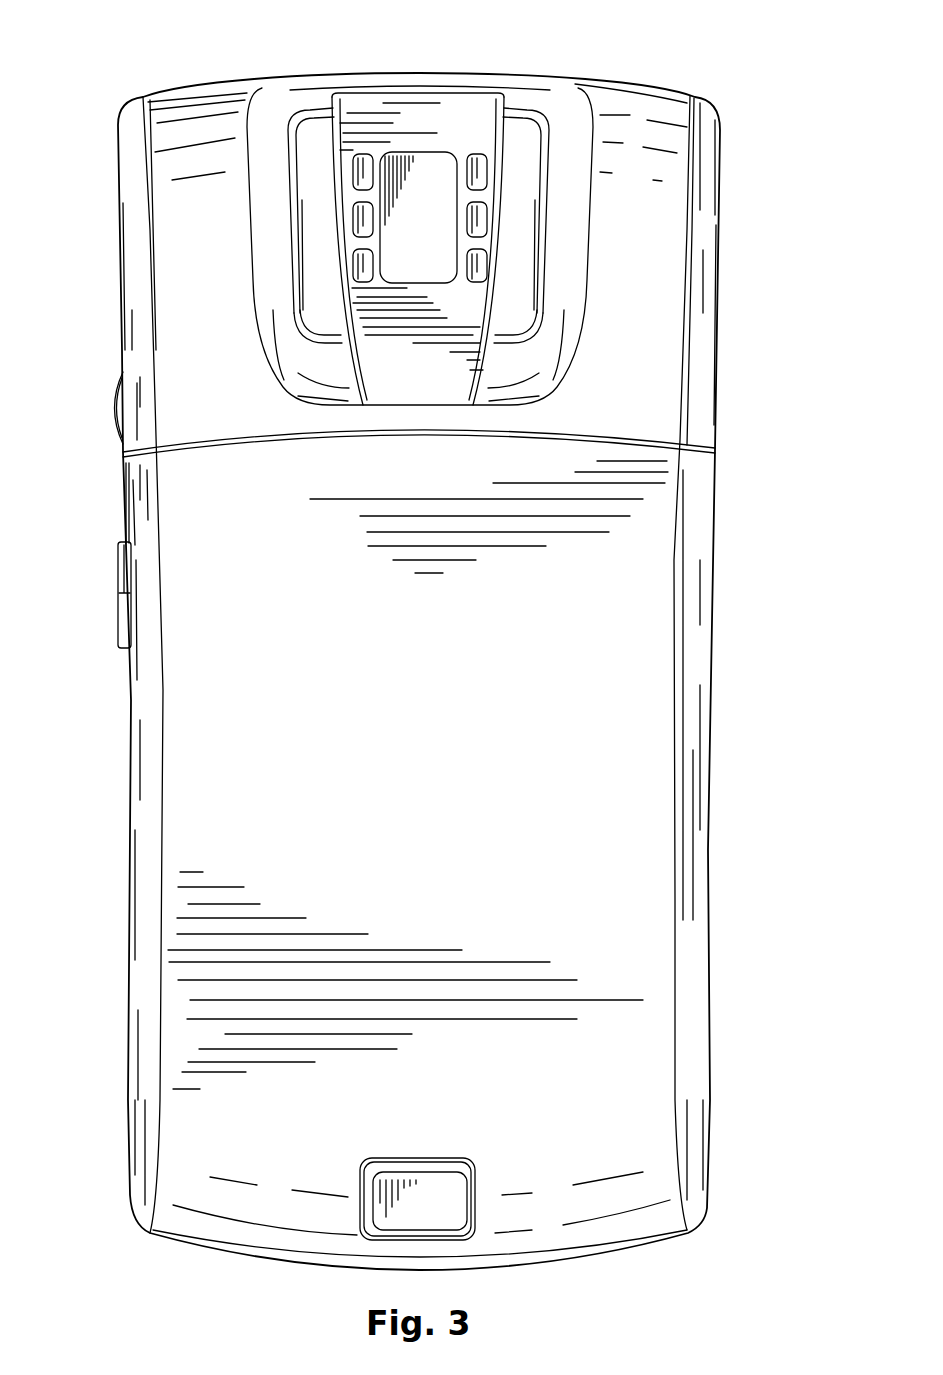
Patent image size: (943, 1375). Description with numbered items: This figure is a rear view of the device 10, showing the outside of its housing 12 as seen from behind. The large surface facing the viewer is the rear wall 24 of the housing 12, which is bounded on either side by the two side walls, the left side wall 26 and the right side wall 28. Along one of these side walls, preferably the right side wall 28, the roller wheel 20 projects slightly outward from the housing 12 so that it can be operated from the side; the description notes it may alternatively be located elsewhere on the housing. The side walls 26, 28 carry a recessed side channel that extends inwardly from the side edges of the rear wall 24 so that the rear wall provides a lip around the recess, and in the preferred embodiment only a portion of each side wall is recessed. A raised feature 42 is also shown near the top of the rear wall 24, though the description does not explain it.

The device 10 is at (748, 128).
The housing 12 is at (623, 112).
The roller wheel 20 is at (114, 388).
The rear wall 24 is at (638, 336).
The left side wall 26 is at (708, 843).
The right side wall 28 is at (130, 806).
The camera housing 42 is at (587, 77).